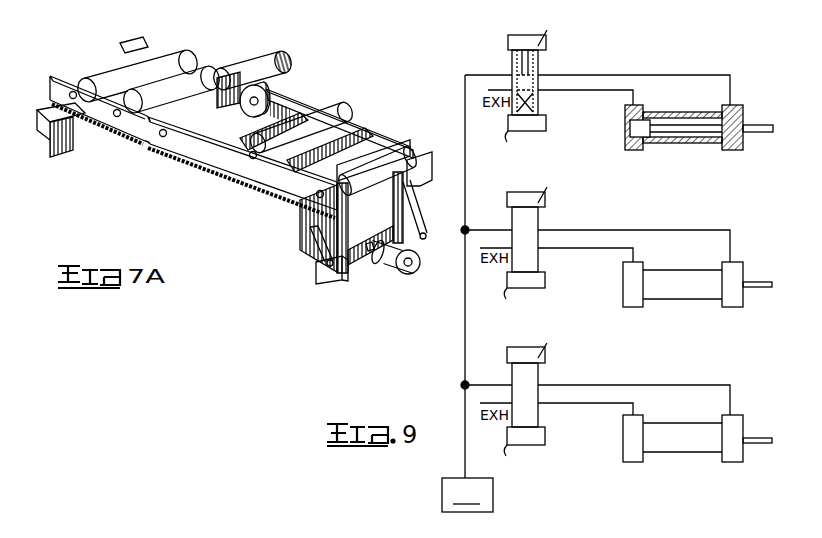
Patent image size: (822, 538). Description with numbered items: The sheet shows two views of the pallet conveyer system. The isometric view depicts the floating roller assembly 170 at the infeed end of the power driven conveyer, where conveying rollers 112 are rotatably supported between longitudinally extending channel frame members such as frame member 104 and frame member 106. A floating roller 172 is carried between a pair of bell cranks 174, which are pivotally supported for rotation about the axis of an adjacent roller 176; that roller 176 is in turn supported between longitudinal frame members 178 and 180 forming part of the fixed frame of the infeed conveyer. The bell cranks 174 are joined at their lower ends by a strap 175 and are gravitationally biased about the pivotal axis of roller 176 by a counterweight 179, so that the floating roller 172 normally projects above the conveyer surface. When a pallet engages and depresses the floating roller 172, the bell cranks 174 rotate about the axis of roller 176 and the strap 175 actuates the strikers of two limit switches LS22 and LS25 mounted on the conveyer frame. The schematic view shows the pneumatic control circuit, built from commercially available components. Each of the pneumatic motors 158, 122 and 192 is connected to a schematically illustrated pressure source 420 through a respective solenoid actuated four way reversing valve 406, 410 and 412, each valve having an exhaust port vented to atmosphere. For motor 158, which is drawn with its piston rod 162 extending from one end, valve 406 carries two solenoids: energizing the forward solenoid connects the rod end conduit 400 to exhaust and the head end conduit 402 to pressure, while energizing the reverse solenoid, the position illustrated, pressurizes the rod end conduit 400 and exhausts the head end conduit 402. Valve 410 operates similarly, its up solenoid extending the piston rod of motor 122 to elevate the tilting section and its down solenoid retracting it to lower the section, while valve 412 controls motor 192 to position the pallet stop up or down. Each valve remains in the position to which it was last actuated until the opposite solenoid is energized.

In FIG. 7A, the longitudinally extending channel frame member 104 is at (42, 110).
In FIG. 7A, the floating roller assembly 170 is at (258, 165).
In FIG. 7A, the longitudinal frame member 178 is at (190, 166).
In FIG. 7A, the conveying rollers 112 is at (207, 70).
In FIG. 7A, the longitudinally extending channel frame member 106 is at (283, 107).
In FIG. 7A, the floating roller 172 is at (319, 125).
In FIG. 7A, the bell cranks 174 is at (358, 143).
In FIG. 7A, the adjacent roller 176 is at (404, 152).
In FIG. 7A, the longitudinal frame member 180 is at (386, 142).
In FIG. 7A, the strap 175 is at (370, 258).
In FIG. 7A, the limit switch LS22 is at (310, 233).
In FIG. 7A, the limit switch LS25 is at (434, 173).
In FIG. 7A, the counterweight 179 is at (413, 268).
In FIG. 9, the pressure source 420 is at (467, 495).
In FIG. 9, the solenoid actuated four way reversing valve 406 is at (547, 66).
In FIG. 9, the rod end conduit 400 is at (644, 75).
In FIG. 9, the head end conduit 402 is at (610, 96).
In FIG. 9, the pneumatic motor 158 is at (711, 108).
In FIG. 9, the piston rod 162 is at (758, 127).
In FIG. 9, the solenoid actuated four way reversing valve 410 is at (544, 222).
In FIG. 9, the pneumatic motor 122 is at (694, 260).
In FIG. 9, the solenoid actuated four way reversing valve 412 is at (544, 378).
In FIG. 9, the pneumatic motor 192 is at (692, 413).